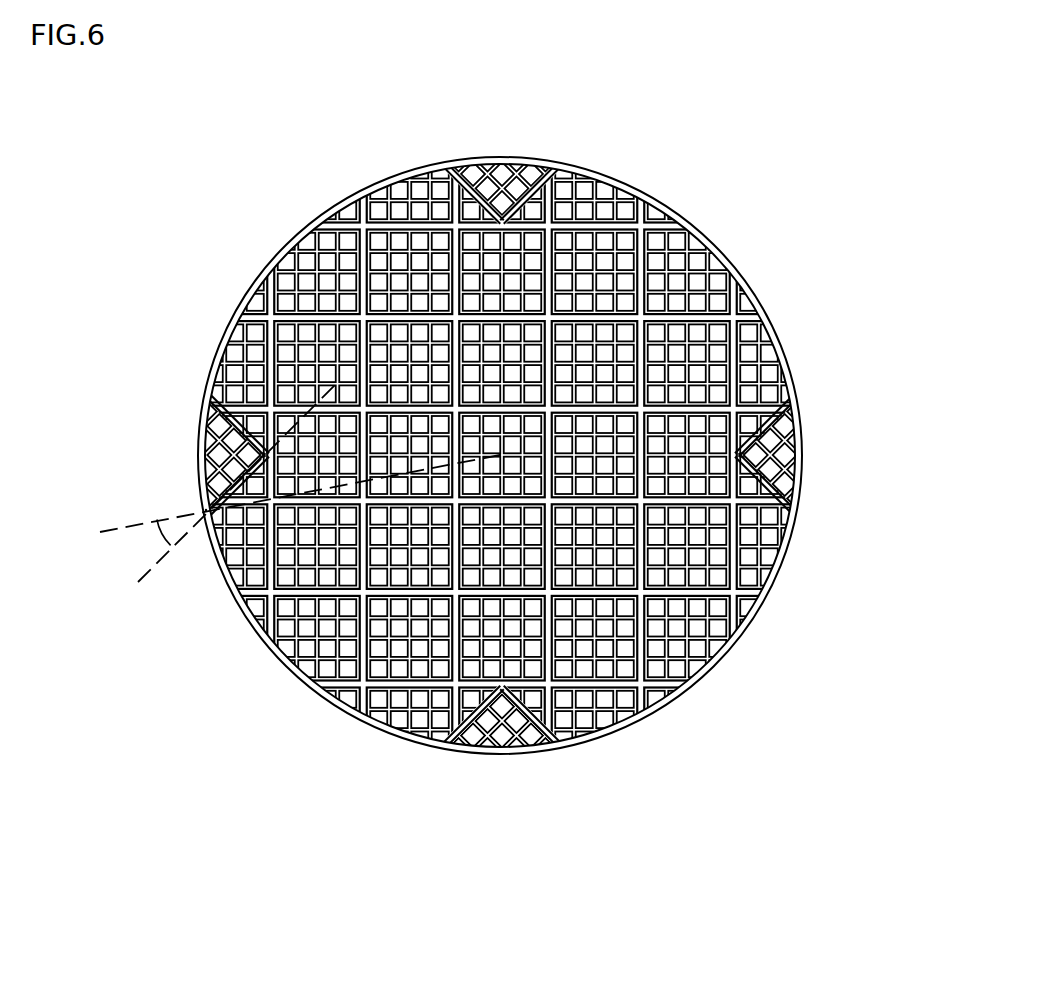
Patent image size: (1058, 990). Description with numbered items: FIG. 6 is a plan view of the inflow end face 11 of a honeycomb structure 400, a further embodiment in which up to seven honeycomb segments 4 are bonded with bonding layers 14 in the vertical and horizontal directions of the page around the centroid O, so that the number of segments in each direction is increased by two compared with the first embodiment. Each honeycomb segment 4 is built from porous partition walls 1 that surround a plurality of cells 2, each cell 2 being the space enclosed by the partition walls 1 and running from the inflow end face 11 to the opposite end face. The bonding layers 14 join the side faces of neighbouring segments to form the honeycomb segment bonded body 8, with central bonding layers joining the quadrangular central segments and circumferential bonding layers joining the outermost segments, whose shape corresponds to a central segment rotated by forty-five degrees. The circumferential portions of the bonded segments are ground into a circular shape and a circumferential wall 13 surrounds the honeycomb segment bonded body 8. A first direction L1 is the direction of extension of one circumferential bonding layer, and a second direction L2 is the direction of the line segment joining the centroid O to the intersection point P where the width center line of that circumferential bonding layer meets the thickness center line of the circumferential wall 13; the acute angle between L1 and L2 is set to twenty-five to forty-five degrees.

The honeycomb structure 400 is at (850, 105).
The partition walls 1 is at (595, 273).
The cells 2 is at (643, 223).
The honeycomb segments 4 is at (502, 454).
The honeycomb segment bonded body 8 is at (743, 283).
The inflow end face 11 is at (303, 211).
The circumferential wall 13 is at (752, 612).
The bonding layers 14 is at (456, 351).
The centroid O is at (500, 455).
The intersection point P is at (206, 510).
The first direction L1 is at (222, 500).
The second direction L2 is at (281, 505).